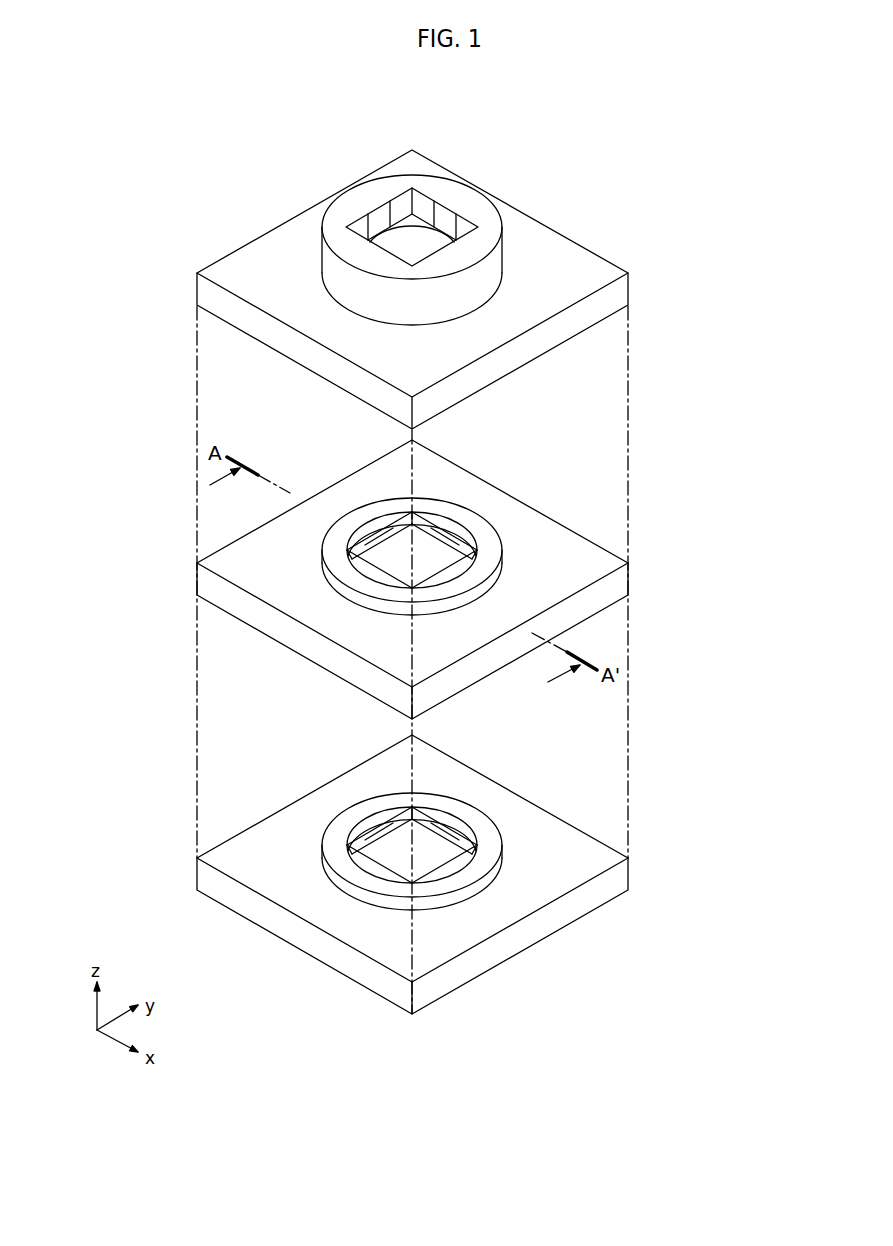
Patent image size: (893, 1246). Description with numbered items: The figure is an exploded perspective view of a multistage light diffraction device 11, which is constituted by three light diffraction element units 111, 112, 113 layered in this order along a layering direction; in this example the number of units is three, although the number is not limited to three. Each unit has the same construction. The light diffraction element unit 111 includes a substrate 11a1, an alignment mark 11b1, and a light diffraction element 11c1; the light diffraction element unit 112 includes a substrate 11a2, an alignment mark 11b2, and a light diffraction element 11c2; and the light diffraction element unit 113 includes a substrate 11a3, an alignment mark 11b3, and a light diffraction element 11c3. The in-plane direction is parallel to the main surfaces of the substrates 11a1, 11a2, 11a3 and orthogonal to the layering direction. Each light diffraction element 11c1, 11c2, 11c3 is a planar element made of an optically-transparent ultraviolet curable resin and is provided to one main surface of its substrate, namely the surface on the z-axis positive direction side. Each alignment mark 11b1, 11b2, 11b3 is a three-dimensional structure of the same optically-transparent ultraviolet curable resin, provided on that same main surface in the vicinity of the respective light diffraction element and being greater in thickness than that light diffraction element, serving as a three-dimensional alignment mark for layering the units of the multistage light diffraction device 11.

The multistage light diffraction device 11 is at (556, 123).
The light diffraction element unit 111 is at (641, 799).
The light diffraction element unit 112 is at (641, 504).
The light diffraction element unit 113 is at (641, 212).
The substrate 11a1 is at (515, 796).
The substrate 11a2 is at (515, 503).
The substrate 11a3 is at (515, 210).
The alignment mark 11b1 is at (420, 795).
The alignment mark 11b2 is at (420, 500).
The alignment mark 11b3 is at (466, 193).
The light diffraction element 11c1 is at (466, 851).
The light diffraction element 11c2 is at (466, 558).
The light diffraction element 11c3 is at (420, 248).